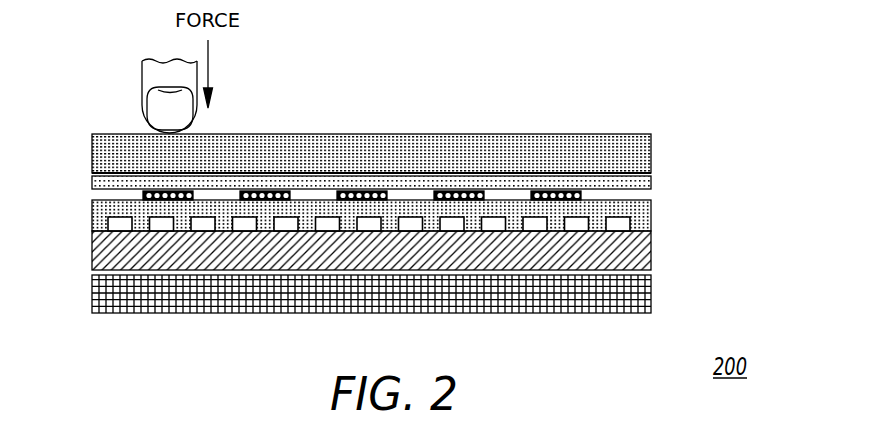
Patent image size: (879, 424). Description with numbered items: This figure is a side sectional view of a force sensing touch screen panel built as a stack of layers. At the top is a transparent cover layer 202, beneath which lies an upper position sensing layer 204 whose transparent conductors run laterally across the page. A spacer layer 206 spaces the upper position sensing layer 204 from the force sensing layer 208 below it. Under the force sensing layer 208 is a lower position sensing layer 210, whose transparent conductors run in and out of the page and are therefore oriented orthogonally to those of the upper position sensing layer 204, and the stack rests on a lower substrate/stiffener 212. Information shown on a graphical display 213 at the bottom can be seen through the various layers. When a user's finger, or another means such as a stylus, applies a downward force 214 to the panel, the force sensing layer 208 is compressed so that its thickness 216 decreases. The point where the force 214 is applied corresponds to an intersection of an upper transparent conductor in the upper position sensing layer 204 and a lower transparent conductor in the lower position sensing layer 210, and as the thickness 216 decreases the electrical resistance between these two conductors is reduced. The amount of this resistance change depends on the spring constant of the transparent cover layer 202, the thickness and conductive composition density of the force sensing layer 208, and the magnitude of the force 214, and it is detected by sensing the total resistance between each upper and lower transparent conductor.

The transparent cover layer 202 is at (651, 146).
The upper position sensing layer 204 is at (651, 177).
The spacer layer 206 is at (664, 195).
The force sensing layer 208 is at (651, 217).
The lower position sensing layer 210 is at (631, 228).
The lower substrate/stiffener 212 is at (651, 258).
The graphical display 213 is at (651, 302).
The downward force 214 is at (210, 52).
The thickness 216 is at (85, 202).